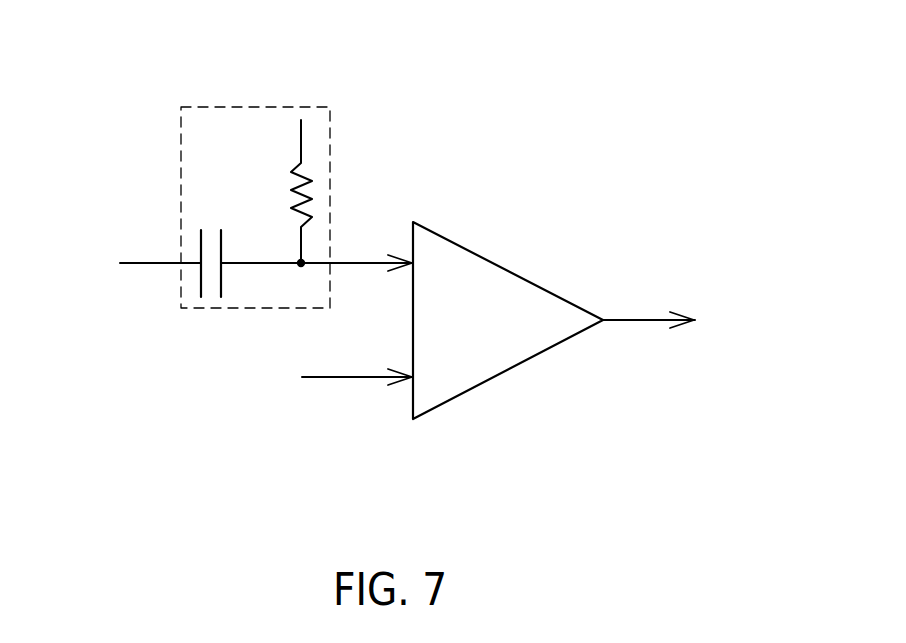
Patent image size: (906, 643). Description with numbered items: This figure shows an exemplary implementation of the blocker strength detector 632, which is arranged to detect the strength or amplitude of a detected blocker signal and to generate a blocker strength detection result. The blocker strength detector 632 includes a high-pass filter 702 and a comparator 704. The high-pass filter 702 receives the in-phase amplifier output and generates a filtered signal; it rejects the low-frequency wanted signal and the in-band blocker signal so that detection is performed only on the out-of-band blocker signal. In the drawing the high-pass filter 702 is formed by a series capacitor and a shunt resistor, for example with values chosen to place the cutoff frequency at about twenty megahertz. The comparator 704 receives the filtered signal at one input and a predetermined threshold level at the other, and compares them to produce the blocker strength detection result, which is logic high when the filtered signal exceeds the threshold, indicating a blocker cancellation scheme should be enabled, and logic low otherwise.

The blocker strength detector 632 is at (616, 118).
The high-pass filter 702 is at (180, 208).
The comparator 704 is at (513, 270).